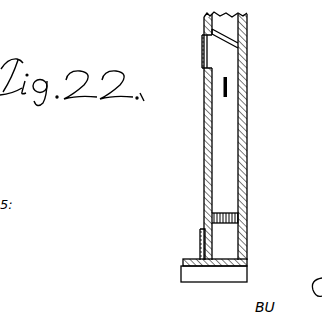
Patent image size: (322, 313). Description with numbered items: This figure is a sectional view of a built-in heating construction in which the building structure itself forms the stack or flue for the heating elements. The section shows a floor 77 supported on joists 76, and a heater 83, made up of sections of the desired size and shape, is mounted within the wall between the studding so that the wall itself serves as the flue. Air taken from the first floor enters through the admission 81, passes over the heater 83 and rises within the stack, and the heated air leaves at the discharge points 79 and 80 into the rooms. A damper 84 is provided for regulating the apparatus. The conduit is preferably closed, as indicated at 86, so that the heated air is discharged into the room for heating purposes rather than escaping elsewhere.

The joists 76 is at (180, 273).
The floor 77 is at (183, 262).
The discharge point 79 is at (202, 50).
The discharge point 80 is at (225, 136).
The admission 81 is at (200, 238).
The heater 83 is at (228, 214).
The damper 84 is at (228, 93).
The closed conduit end 86 is at (234, 40).